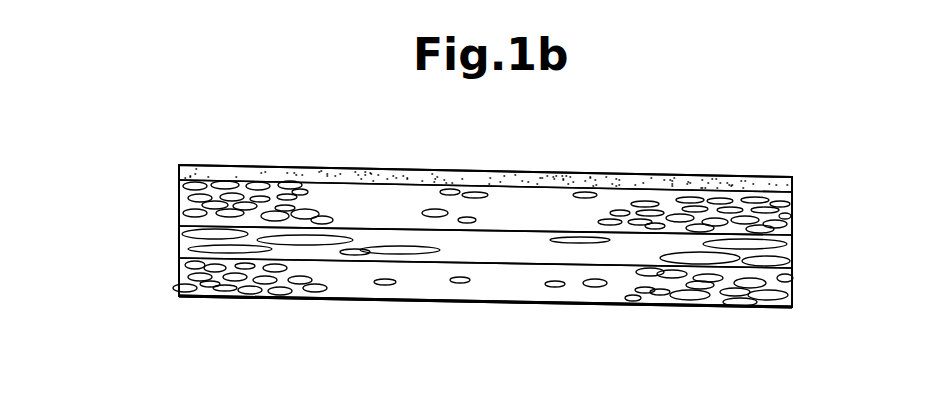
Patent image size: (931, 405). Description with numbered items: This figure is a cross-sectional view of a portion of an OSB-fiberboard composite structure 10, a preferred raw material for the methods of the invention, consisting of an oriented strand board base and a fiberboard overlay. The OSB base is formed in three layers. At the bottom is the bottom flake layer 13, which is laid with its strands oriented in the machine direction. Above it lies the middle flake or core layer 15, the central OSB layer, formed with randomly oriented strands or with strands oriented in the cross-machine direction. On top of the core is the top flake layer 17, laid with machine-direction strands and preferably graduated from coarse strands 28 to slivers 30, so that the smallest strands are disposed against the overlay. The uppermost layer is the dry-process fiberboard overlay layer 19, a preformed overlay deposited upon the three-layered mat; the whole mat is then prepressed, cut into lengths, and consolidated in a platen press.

The OSB-fiberboard composite structure 10 is at (558, 150).
The bottom flake layer 13 is at (792, 288).
The middle flake or core layer 15 is at (792, 258).
The top flake layer 17 is at (792, 213).
The dry-process fiberboard overlay layer 19 is at (792, 187).
The coarse strands 28 is at (178, 208).
The slivers 30 is at (178, 188).